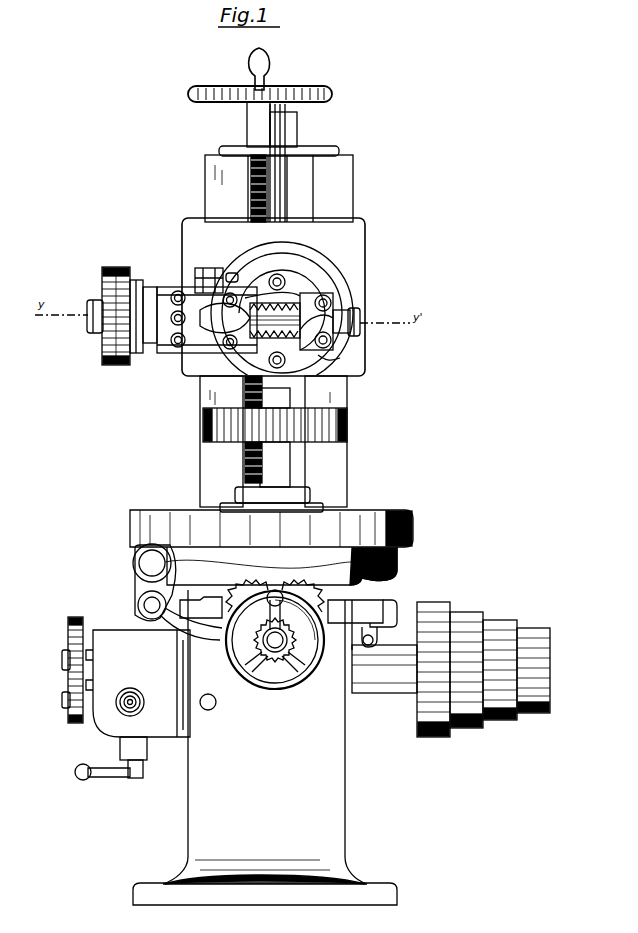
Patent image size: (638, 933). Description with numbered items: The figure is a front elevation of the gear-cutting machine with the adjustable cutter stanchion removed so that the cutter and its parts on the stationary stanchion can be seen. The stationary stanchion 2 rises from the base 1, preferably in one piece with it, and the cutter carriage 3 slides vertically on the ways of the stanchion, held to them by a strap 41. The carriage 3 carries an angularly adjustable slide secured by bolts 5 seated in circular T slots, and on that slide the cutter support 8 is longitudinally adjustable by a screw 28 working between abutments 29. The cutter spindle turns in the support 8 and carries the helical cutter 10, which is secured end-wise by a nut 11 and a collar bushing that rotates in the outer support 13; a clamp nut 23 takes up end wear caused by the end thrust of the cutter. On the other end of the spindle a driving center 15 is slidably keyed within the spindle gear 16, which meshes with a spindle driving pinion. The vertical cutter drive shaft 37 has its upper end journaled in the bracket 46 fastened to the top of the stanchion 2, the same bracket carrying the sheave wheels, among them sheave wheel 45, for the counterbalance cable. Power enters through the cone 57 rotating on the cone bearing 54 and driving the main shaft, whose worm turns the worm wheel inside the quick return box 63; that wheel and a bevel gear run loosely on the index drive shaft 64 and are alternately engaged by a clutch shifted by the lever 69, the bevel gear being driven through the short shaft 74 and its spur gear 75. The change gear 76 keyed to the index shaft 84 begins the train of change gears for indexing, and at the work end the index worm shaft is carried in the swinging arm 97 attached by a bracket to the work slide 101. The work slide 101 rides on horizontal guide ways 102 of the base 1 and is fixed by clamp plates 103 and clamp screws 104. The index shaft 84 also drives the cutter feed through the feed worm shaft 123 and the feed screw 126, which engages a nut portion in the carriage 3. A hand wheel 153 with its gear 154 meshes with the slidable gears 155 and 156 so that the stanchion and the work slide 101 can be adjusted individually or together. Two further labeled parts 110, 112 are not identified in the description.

The base 1 is at (340, 847).
The stanchion 2 is at (345, 190).
The cutter carriage 3 is at (365, 250).
The bolts 5 is at (285, 282).
The cutter support 8 is at (205, 345).
The helical cutter 10 is at (270, 340).
The nut 11 is at (353, 312).
The outer support 13 is at (310, 350).
The driving center 15 is at (104, 285).
The spindle gear 16 is at (116, 309).
The clamp nut 23 is at (98, 333).
The screw 28 is at (272, 289).
The abutments 29 is at (200, 268).
The vertical cutter drive shaft 37 is at (284, 208).
The sheave wheel 45 is at (283, 176).
The bracket 46 is at (297, 148).
The cone bearing 54 is at (388, 696).
The cone 57 is at (462, 610).
The quick return box 63 is at (108, 730).
The index drive shaft 64 is at (140, 708).
The lever 69 is at (110, 777).
The short shaft 74 is at (62, 700).
The spur gear 75 is at (72, 720).
The change gear 76 is at (72, 617).
The index shaft 84 is at (145, 606).
The swinging arm 97 is at (135, 587).
The work slide 101 is at (386, 567).
The horizontal guide ways 102 is at (360, 599).
The clamp plates 103 is at (388, 620).
The clamp screws 104 is at (378, 632).
The nut 110 is at (296, 484).
The gear 112 is at (286, 456).
The feed worm shaft 123 is at (213, 706).
The feed screw 126 is at (262, 188).
The hand wheel 153 is at (300, 684).
The gear 154 is at (279, 645).
The slidable keyed gear 155 is at (250, 601).
The gear 156 is at (318, 605).
The strap 41 is at (258, 674).